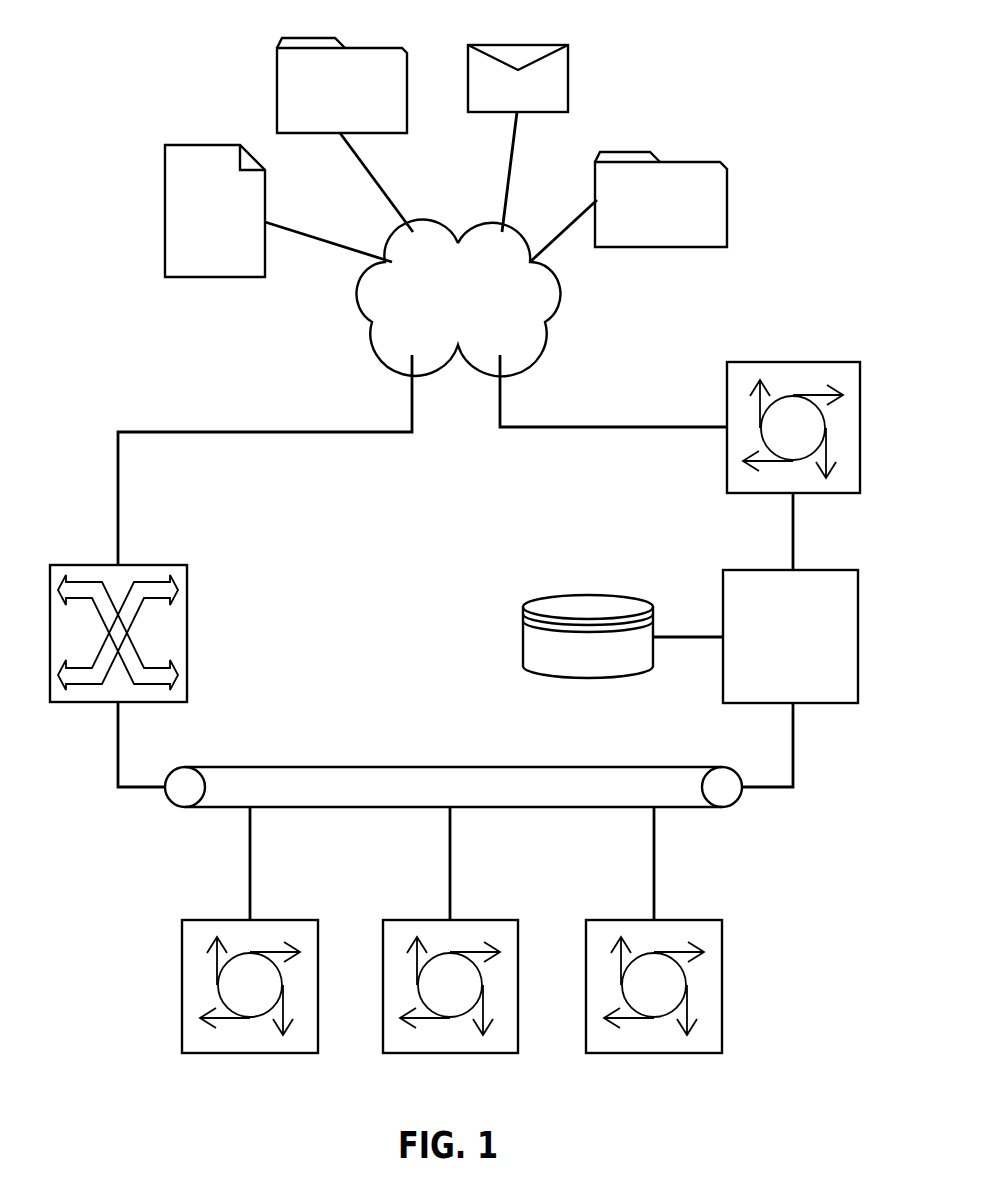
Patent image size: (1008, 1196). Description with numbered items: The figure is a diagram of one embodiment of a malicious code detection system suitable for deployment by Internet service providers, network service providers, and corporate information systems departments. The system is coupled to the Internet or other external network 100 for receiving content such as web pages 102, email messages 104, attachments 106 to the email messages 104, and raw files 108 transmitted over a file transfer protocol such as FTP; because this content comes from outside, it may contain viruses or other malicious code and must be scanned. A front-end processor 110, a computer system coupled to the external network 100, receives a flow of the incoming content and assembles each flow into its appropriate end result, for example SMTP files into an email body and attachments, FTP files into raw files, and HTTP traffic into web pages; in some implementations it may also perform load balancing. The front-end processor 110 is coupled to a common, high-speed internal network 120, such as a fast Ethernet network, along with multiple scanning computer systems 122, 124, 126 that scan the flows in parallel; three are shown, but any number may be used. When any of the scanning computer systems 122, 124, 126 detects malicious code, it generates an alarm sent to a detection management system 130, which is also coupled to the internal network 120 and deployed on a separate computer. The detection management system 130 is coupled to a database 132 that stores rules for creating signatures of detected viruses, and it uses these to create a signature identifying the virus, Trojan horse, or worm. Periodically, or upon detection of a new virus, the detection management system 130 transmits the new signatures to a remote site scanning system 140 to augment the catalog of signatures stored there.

The external network 100 is at (458, 243).
The web pages 102 is at (165, 145).
The email messages 104 is at (568, 45).
The attachments 106 is at (722, 162).
The raw files 108 is at (400, 48).
The front-end processor 110 is at (187, 567).
The internal network 120 is at (196, 769).
The scanning computer system 122 is at (273, 920).
The scanning computer system 124 is at (474, 920).
The scanning computer system 126 is at (677, 920).
The detection management system 130 is at (815, 570).
The database 132 is at (588, 592).
The remote site scanning system 140 is at (805, 362).